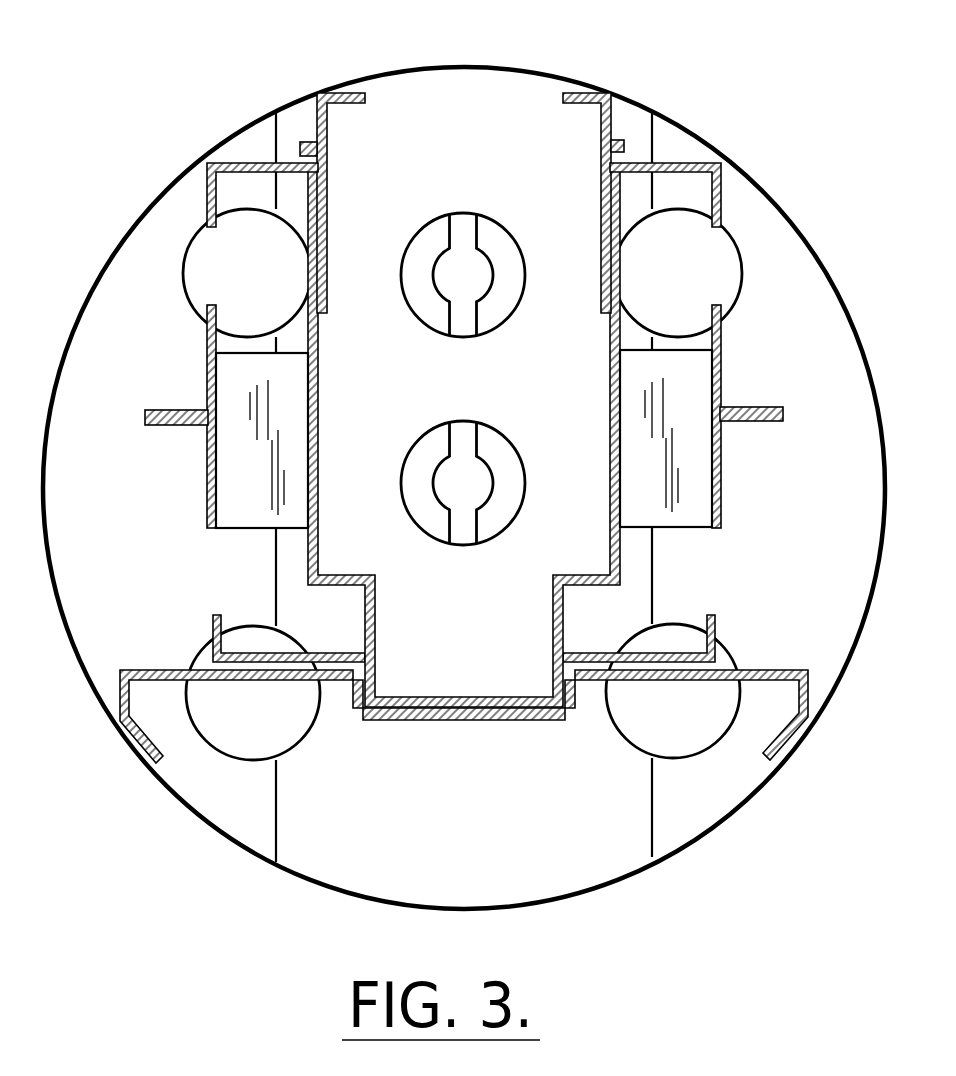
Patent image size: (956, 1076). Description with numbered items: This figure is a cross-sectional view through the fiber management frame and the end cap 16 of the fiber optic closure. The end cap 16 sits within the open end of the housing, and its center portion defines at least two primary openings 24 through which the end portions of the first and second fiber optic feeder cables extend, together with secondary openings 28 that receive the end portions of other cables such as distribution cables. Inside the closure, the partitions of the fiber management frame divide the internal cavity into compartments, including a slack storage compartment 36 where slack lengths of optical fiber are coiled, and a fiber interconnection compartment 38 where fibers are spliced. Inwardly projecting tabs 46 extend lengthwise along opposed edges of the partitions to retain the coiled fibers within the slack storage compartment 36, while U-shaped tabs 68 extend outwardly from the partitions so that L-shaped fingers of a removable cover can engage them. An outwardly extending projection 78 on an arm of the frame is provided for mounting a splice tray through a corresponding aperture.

The end cap 16 is at (602, 868).
The primary openings 24 is at (463, 223).
The secondary openings 28 is at (708, 264).
The slack storage compartment 36 is at (585, 496).
The fiber interconnection compartment 38 is at (353, 852).
The tabs 46 is at (237, 160).
The U-shaped tabs 68 is at (303, 143).
The outwardly extending projection 78 is at (168, 428).